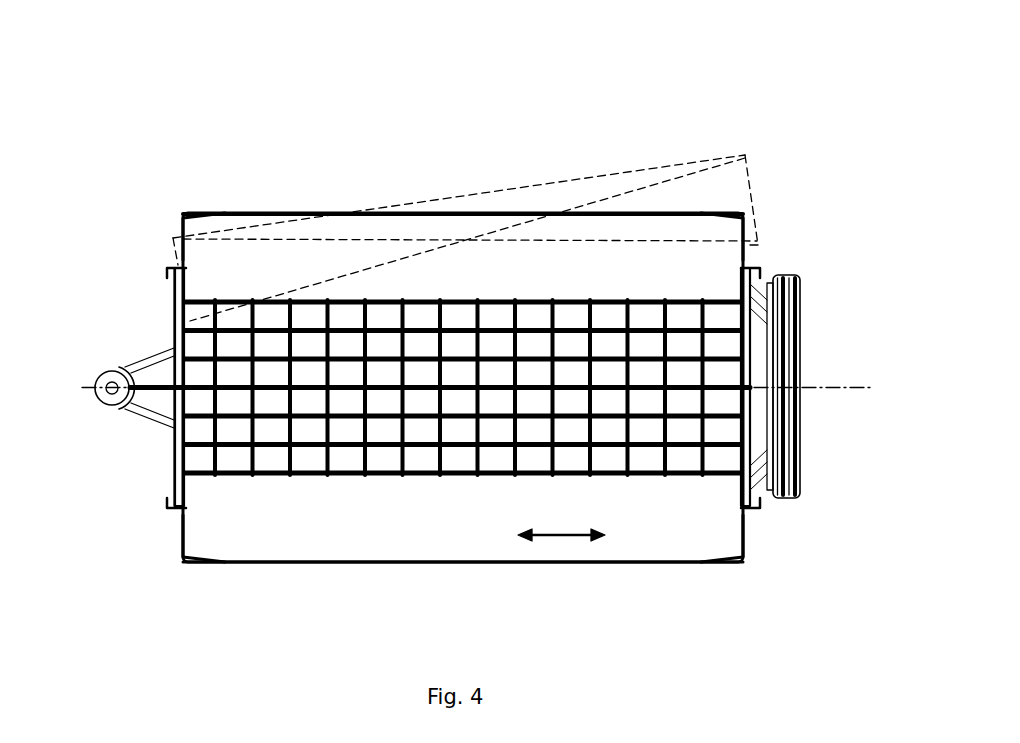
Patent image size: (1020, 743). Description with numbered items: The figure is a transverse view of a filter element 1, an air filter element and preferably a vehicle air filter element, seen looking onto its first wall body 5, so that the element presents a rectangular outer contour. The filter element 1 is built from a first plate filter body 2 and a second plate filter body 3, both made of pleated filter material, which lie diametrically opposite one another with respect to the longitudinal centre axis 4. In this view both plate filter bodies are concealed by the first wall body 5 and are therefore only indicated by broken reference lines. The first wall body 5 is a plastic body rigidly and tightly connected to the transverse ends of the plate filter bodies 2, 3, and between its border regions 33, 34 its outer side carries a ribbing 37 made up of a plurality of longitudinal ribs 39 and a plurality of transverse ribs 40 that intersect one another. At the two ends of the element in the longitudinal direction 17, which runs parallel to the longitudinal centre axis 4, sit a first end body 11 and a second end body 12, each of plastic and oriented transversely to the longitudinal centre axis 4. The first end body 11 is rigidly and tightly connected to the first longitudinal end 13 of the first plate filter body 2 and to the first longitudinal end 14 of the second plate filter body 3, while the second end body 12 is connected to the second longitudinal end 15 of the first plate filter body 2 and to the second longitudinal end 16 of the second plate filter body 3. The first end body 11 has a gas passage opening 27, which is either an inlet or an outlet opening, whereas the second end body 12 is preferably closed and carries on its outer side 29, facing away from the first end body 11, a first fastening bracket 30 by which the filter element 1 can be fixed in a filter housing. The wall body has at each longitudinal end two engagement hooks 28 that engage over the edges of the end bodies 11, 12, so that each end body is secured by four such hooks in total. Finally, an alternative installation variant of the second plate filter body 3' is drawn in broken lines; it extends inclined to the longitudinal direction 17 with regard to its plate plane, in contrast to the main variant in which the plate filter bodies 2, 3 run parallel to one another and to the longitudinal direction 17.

The filter element 1 is at (796, 154).
The first plate filter body 2 is at (301, 572).
The second plate filter body 3 is at (463, 173).
The second plate filter body in alternative installation variant 3' is at (465, 219).
The longitudinal centre axis 4 is at (845, 386).
The first wall body 5 is at (480, 575).
The first end body 11 is at (808, 276).
The second end body 12 is at (166, 301).
The first longitudinal end of the first plate filter body 13 is at (745, 530).
The first longitudinal end of the second plate filter body 14 is at (745, 238).
The second longitudinal end of the first plate filter body 15 is at (182, 535).
The second longitudinal end of the second plate filter body 16 is at (182, 228).
The longitudinal direction 17 is at (562, 541).
The gas passage opening 27 is at (802, 405).
The engagement hooks 28 is at (168, 263).
The outer side 29 is at (177, 328).
The first fastening bracket 30 is at (114, 372).
The border region 33 is at (387, 536).
The border region 34 is at (266, 257).
The ribbing 37 is at (268, 460).
The longitudinal ribs 39 is at (345, 422).
The transverse ribs 40 is at (495, 432).